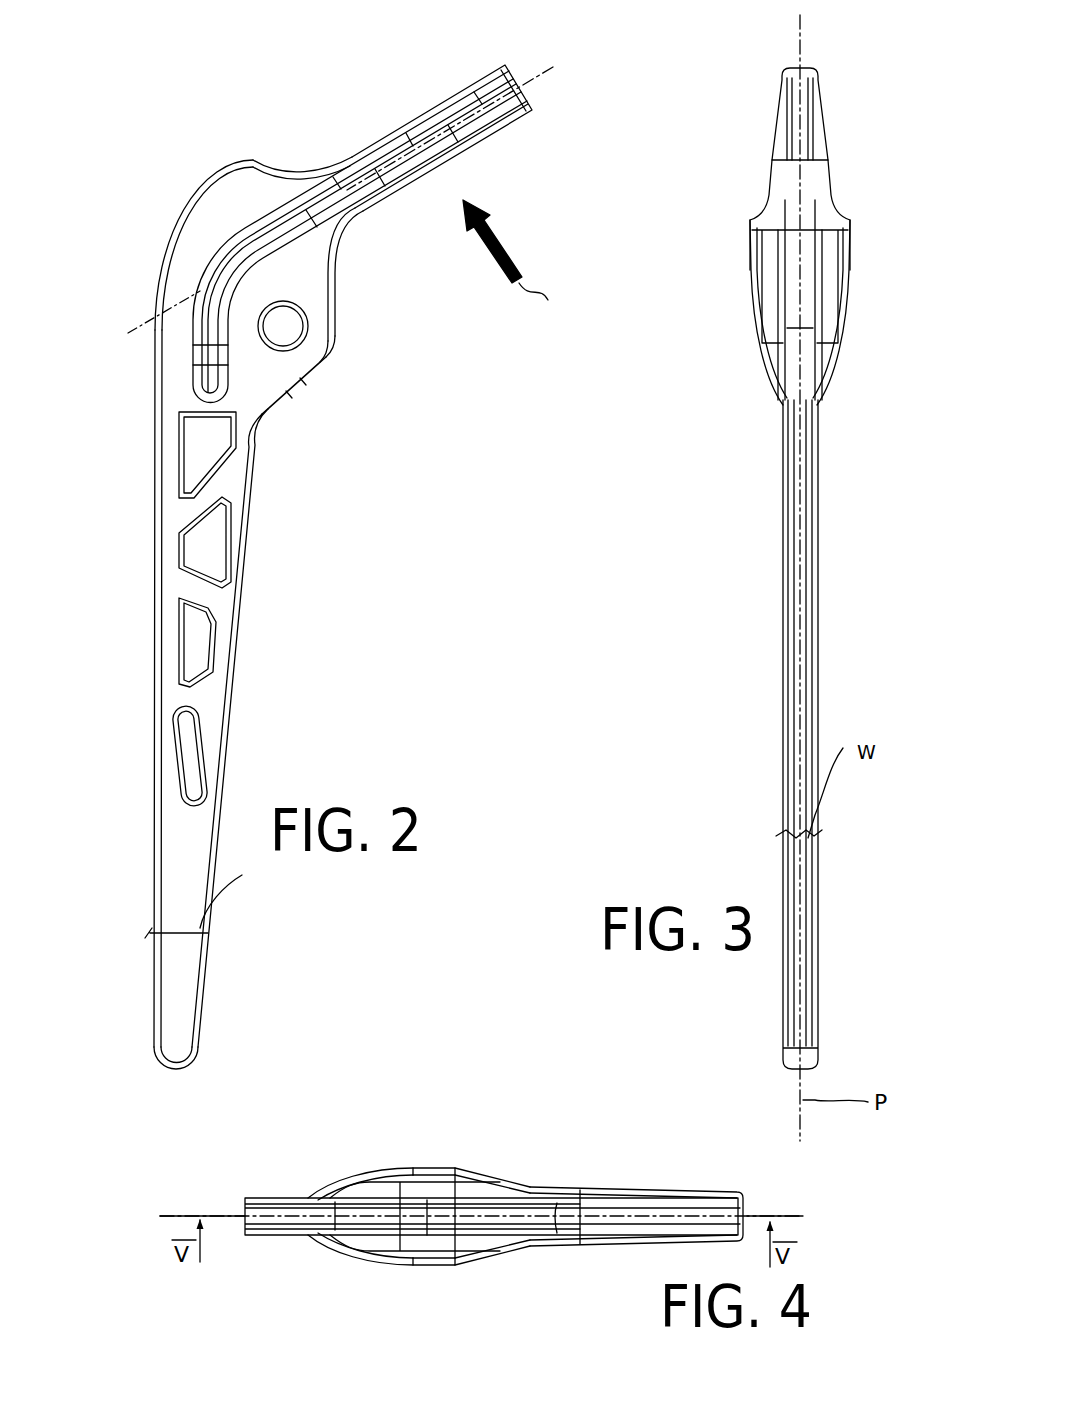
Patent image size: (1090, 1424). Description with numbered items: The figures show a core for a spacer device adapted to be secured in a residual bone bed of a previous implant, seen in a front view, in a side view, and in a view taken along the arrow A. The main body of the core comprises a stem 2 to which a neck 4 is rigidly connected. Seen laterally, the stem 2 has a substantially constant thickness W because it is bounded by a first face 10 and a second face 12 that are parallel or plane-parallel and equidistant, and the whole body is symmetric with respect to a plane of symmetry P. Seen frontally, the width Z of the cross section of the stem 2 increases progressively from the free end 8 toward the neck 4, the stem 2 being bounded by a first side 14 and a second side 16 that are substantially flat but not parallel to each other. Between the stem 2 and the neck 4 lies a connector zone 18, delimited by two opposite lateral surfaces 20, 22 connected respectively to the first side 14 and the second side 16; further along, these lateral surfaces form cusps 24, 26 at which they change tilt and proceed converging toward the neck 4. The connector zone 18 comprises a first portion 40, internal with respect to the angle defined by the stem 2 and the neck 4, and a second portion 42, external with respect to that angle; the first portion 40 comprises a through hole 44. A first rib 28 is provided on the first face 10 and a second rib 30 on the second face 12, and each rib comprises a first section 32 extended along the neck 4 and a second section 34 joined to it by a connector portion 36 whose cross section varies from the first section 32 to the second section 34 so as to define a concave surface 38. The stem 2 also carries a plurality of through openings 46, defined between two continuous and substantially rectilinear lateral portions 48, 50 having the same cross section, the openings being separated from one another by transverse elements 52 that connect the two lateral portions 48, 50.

In FIG. 2, the stem 2 is at (231, 961).
In FIG. 3, the stem 2 is at (764, 766).
In FIG. 4, the stem 2 is at (497, 1206).
In FIG. 2, the neck 4 is at (515, 130).
In FIG. 3, the neck 4 is at (823, 63).
In FIG. 4, the neck 4 is at (728, 1186).
In FIG. 2, the free end 8 is at (170, 1065).
In FIG. 3, the first face 10 is at (822, 604).
In FIG. 3, the second face 12 is at (780, 604).
In FIG. 2, the first side 14 is at (244, 648).
In FIG. 2, the second side 16 is at (150, 613).
In FIG. 2, the connector zone 18 is at (353, 379).
In FIG. 2, the lateral surface 20 is at (340, 327).
In FIG. 2, the lateral surface 22 is at (179, 222).
In FIG. 2, the cusp 24 is at (331, 366).
In FIG. 2, the cusp 26 is at (252, 158).
In FIG. 3, the first rib 28 is at (853, 258).
In FIG. 4, the first rib 28 is at (432, 1272).
In FIG. 3, the second rib 30 is at (747, 265).
In FIG. 4, the second rib 30 is at (418, 1163).
In FIG. 4, the first section 32 is at (664, 1185).
In FIG. 4, the second section 34 is at (362, 1170).
In FIG. 4, the connector portion 36 is at (480, 1168).
In FIG. 4, the concave surface 38 is at (521, 1176).
In FIG. 2, the first portion 40 is at (338, 343).
In FIG. 2, the second portion 42 is at (222, 192).
In FIG. 2, the through hole 44 is at (284, 335).
In FIG. 2, the through openings 46 is at (225, 446).
In FIG. 2, the lateral portion 48 is at (224, 686).
In FIG. 2, the lateral portion 50 is at (153, 830).
In FIG. 2, the transverse elements 52 is at (207, 504).